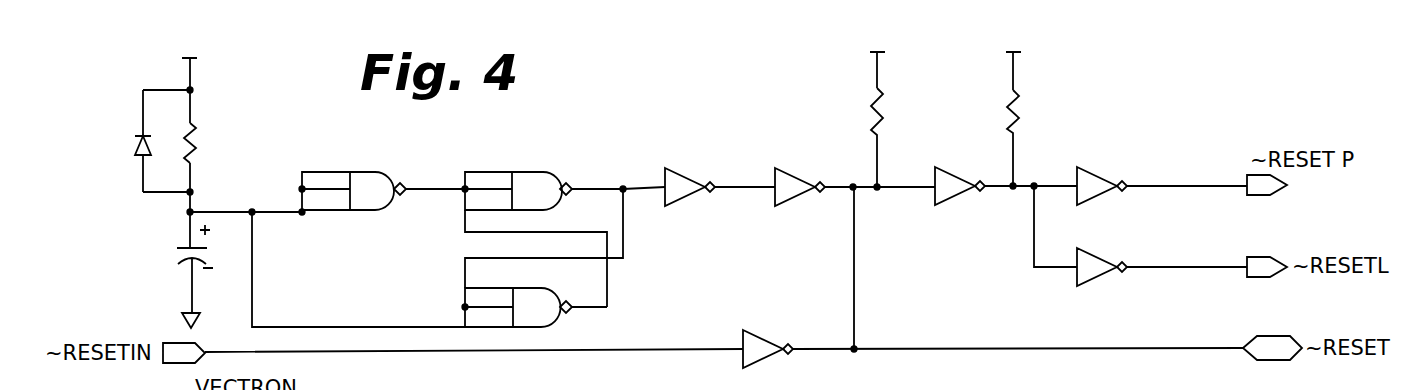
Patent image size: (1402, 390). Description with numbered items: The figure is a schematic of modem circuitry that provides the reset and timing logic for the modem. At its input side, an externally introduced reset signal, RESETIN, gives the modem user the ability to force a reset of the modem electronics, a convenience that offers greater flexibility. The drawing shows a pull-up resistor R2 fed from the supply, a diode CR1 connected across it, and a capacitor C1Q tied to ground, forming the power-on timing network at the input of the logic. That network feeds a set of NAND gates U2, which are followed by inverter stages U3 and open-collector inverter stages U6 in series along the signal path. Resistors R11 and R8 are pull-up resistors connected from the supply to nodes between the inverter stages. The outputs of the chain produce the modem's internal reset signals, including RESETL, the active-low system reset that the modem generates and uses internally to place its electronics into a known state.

The resistor R2 39.2K R2 is at (225, 137).
The diode CR1 1N3064 CR1 is at (125, 141).
The capacitor C10 1uF 50V C1Q is at (165, 276).
The NAND gate 4023B U2 is at (464, 241).
The inverter 54F04 U3 is at (946, 221).
The open-collector inverter 54ALS05A U6 is at (861, 263).
The resistor R11 511 ohm R11 is at (905, 119).
The resistor R8 1K R8 is at (1048, 119).